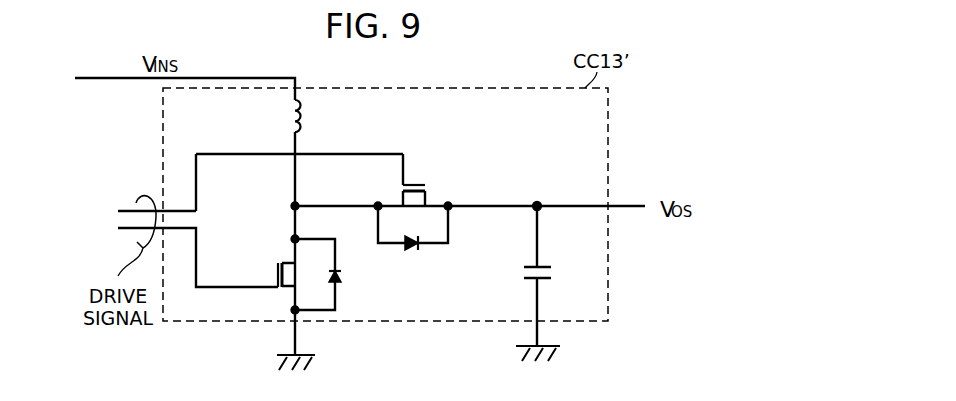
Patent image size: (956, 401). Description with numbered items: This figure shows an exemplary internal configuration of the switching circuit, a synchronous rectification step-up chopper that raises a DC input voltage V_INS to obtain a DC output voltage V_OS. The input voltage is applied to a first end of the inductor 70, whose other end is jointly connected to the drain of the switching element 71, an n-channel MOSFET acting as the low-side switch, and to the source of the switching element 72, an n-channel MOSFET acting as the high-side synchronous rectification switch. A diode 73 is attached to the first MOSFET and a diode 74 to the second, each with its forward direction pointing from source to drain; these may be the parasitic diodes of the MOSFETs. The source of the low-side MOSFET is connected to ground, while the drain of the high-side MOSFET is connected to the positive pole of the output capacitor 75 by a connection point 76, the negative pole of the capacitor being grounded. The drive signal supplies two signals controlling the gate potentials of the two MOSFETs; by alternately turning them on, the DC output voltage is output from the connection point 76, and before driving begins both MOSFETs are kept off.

The inductor 70 is at (302, 113).
The switching element 71 is at (290, 262).
The switching element 72 is at (427, 190).
The diode 73 is at (337, 281).
The diode 74 is at (409, 251).
The output capacitor 75 is at (524, 270).
The connection point 76 is at (537, 203).